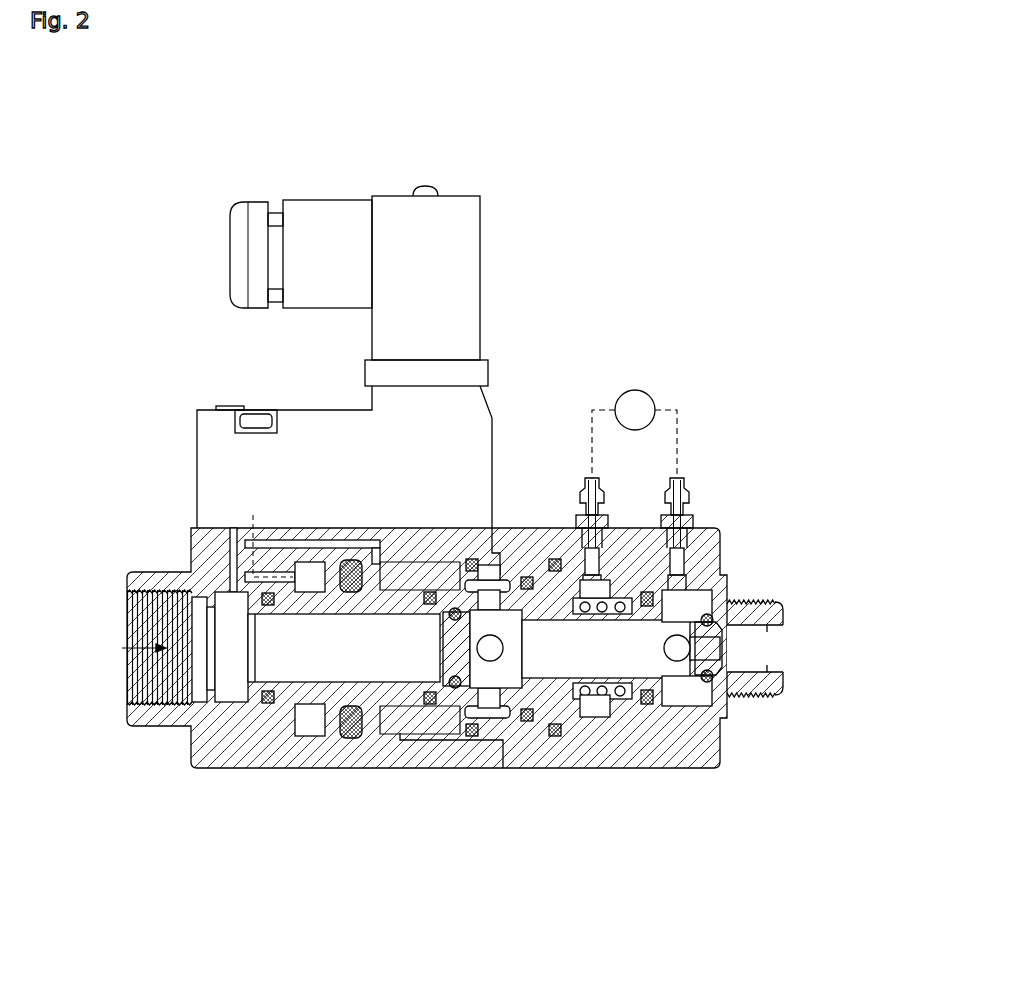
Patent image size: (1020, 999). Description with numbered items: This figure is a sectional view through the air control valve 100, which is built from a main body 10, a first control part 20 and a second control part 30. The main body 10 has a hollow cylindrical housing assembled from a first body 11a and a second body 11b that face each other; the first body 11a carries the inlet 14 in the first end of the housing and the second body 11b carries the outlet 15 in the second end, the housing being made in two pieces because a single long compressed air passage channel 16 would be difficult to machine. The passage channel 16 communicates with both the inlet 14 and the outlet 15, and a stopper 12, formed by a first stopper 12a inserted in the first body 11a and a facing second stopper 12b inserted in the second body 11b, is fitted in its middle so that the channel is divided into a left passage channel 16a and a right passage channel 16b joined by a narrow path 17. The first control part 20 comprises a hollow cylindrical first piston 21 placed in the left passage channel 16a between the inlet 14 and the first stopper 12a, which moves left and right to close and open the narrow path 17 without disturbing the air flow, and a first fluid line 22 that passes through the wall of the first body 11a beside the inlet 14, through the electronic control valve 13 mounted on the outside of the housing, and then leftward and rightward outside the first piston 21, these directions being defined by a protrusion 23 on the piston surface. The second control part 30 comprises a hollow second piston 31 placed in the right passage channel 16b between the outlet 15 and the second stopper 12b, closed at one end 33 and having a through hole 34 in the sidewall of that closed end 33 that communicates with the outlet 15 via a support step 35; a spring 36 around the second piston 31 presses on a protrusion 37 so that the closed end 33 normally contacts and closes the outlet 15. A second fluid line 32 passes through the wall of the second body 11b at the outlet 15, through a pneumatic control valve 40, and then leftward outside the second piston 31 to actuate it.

The air control valve 100 is at (604, 142).
The main body 10 is at (207, 786).
The first body 11a is at (306, 770).
The second body 11b is at (598, 762).
The stopper 12 is at (552, 868).
The first stopper 12a is at (458, 732).
The second stopper 12b is at (541, 742).
The electronic control valve 13 is at (197, 437).
The inlet 14 is at (140, 686).
The outlet 15 is at (770, 672).
The compressed air passage channel 16 is at (558, 662).
The left passage channel 16a is at (368, 659).
The right passage channel 16b is at (623, 659).
The narrow path 17 is at (492, 584).
The first control part 20 is at (90, 470).
The first piston 21 is at (286, 627).
The first fluid line 22 is at (292, 572).
The protrusion 23 is at (318, 566).
The second control part 30 is at (790, 435).
The second piston 31 is at (652, 624).
The second fluid line 32 is at (680, 422).
The closed end 33 is at (726, 652).
The through hole 34 is at (721, 700).
The support step 35 is at (722, 574).
The spring 36 is at (616, 698).
The protrusion 37 is at (674, 694).
The pneumatic control valve 40 is at (636, 390).